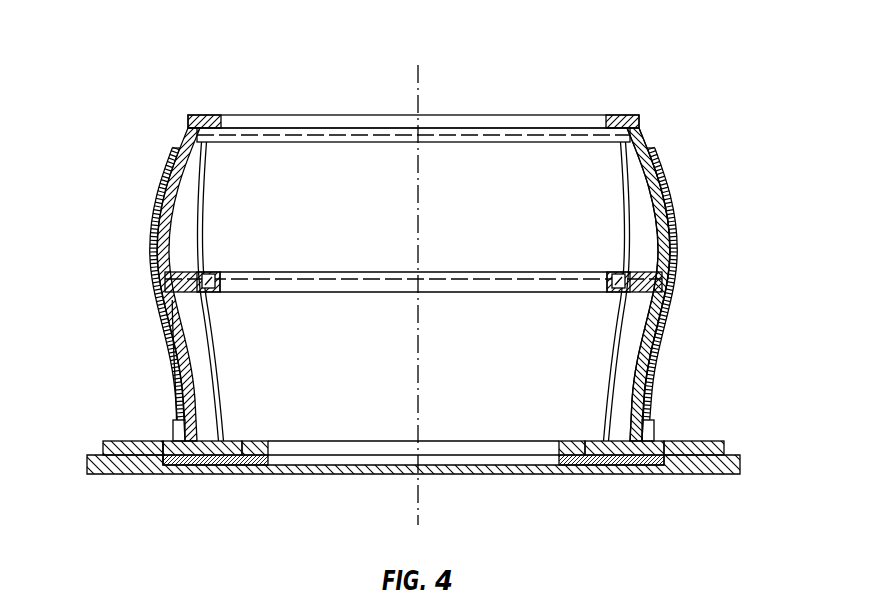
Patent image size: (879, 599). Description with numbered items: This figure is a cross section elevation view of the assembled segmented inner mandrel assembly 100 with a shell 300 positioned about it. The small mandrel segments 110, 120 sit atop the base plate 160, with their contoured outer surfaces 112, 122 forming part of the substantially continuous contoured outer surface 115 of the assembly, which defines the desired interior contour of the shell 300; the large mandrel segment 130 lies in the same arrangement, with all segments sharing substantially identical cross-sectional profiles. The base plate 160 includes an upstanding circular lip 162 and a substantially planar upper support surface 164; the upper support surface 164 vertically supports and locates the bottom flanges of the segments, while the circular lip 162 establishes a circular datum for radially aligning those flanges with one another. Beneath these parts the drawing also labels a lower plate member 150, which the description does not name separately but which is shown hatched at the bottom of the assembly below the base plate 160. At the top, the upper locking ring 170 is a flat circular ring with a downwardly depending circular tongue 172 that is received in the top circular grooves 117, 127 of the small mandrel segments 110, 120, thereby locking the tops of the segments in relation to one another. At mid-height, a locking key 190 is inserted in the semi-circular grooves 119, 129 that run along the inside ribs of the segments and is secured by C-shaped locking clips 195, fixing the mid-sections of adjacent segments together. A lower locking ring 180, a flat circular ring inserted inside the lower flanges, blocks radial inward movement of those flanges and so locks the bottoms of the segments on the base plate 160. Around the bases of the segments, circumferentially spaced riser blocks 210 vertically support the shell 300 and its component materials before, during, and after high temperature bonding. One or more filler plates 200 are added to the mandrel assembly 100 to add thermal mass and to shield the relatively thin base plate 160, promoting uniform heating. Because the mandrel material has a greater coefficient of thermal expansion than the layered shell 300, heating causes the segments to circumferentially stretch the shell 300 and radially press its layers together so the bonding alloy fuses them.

The inner mandrel assembly 100 is at (478, 90).
The small mandrel segment 110 is at (641, 350).
The contoured outer surface 112 is at (667, 178).
The contoured outer surface 115 is at (642, 284).
The top circular groove 117 is at (637, 116).
The semi-circular groove 119 is at (618, 296).
The small mandrel segment 120 is at (180, 364).
The contoured outer surface 122 is at (168, 326).
The top circular groove 127 is at (203, 115).
The semi-circular groove 129 is at (220, 280).
The large mandrel segment 130 is at (553, 221).
The base plate 150 is at (740, 468).
The base plate 160 is at (221, 443).
The upstanding circular lip 162 is at (178, 448).
The upper support surface 164 is at (596, 441).
The upper locking ring 170 is at (613, 115).
The circular tongue 172 is at (213, 137).
The lower locking ring 180 is at (264, 441).
The locking key 190 is at (212, 272).
The locking clips 195 is at (216, 298).
The filler plate 200 is at (724, 443).
The riser block 210 is at (163, 444).
The shell 300 is at (157, 182).